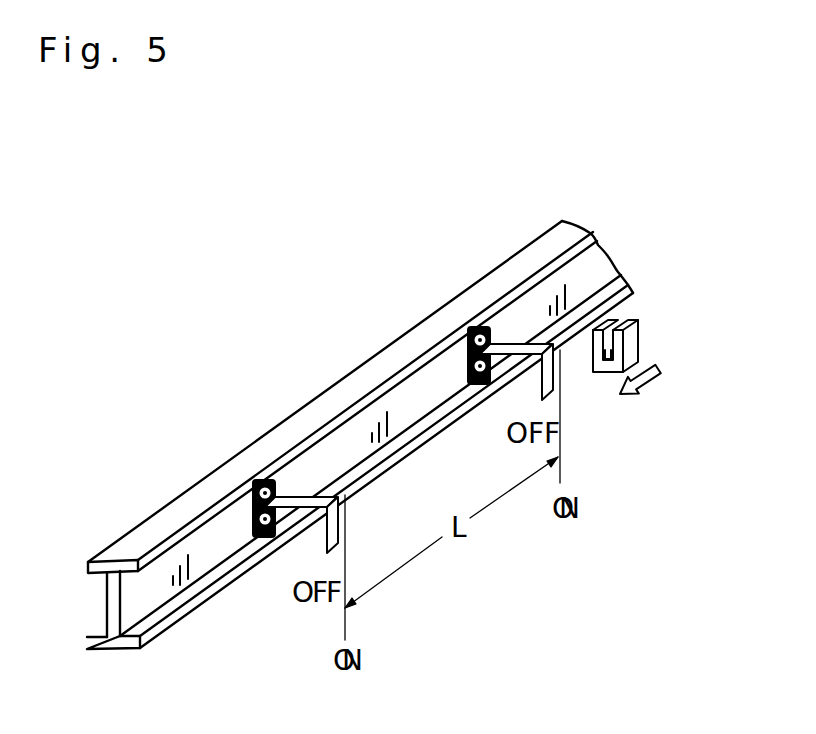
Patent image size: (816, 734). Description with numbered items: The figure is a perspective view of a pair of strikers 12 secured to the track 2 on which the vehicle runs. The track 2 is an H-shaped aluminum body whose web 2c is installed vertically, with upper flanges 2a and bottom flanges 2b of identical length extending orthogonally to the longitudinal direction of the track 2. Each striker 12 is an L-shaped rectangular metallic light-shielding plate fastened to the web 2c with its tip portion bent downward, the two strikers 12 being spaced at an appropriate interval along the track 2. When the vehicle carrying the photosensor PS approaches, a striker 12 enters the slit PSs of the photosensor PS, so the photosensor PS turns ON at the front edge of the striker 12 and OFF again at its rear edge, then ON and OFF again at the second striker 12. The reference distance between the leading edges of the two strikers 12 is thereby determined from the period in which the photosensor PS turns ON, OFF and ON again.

The track 2 is at (315, 393).
The upper flange 2a is at (162, 543).
The bottom flange 2b is at (95, 649).
The web 2c is at (158, 597).
The striker 12 is at (330, 537).
The photosensor PS is at (644, 338).
The slit of the photosensor PSs is at (606, 374).